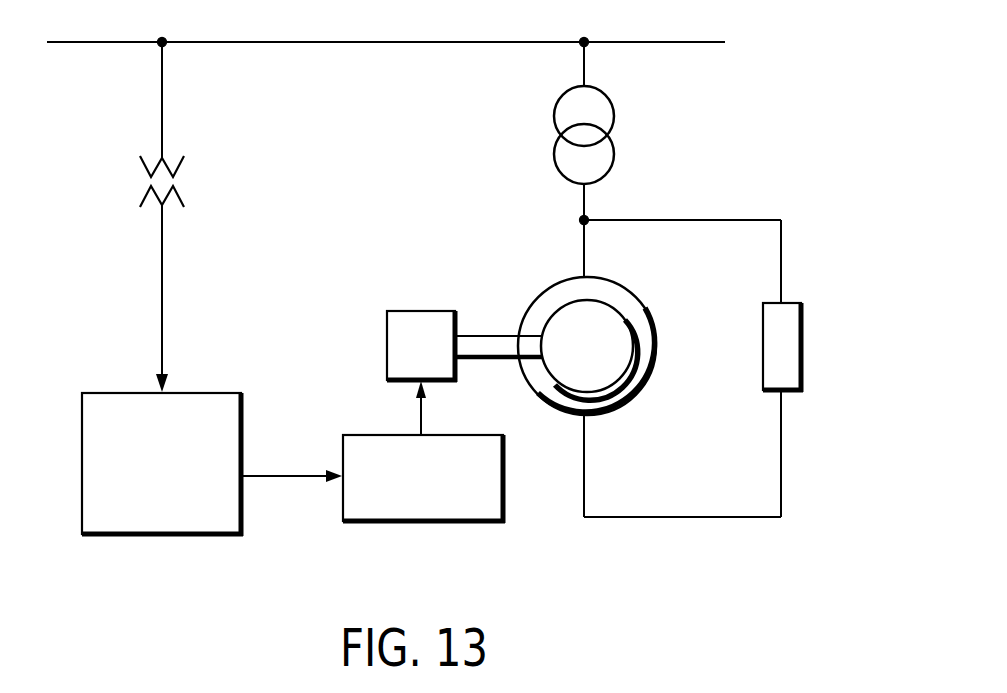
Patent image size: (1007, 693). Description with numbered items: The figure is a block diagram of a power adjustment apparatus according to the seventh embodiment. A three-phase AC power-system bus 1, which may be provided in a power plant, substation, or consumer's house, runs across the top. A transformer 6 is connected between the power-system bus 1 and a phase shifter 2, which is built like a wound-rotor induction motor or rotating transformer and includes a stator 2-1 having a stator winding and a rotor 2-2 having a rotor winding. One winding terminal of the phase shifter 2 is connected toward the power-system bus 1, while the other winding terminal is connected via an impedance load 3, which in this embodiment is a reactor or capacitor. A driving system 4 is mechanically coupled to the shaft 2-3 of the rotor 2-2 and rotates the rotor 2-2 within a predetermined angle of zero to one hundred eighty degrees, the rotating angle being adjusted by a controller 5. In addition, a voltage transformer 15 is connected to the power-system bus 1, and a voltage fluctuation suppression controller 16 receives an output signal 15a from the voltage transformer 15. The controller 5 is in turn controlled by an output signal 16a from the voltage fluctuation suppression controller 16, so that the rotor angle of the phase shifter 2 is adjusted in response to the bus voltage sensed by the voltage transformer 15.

The power-system bus 1 is at (433, 41).
The voltage transformer 15 is at (186, 184).
The output signal 15a is at (164, 275).
The voltage fluctuation suppression controller 16 is at (211, 523).
The output signal 16a is at (283, 479).
The controller 5 is at (474, 508).
The driving system 4 is at (386, 346).
The shaft 2-3 is at (494, 334).
The phase shifter 2 is at (628, 349).
The stator 2-1 is at (631, 292).
The rotor 2-2 is at (600, 373).
The transformer 6 is at (616, 113).
The impedance load 3 is at (792, 343).